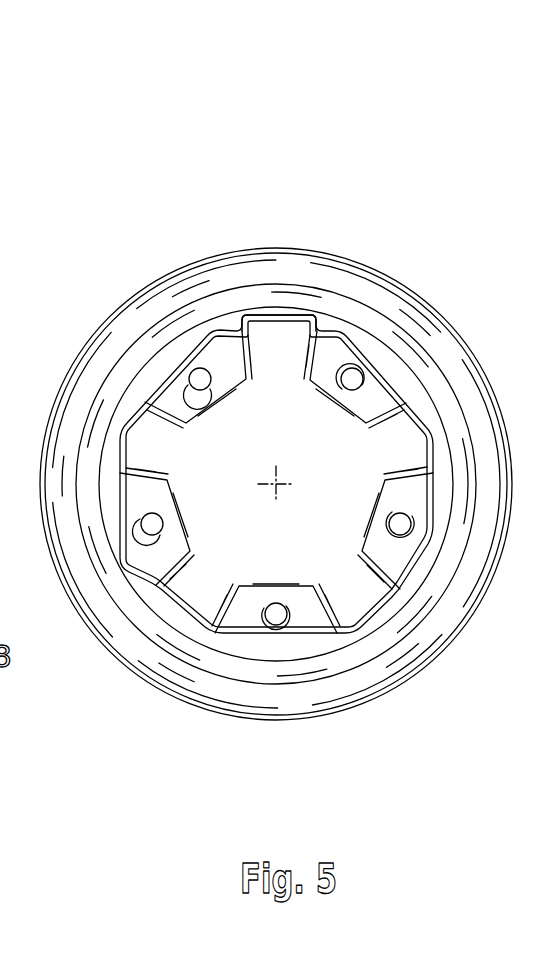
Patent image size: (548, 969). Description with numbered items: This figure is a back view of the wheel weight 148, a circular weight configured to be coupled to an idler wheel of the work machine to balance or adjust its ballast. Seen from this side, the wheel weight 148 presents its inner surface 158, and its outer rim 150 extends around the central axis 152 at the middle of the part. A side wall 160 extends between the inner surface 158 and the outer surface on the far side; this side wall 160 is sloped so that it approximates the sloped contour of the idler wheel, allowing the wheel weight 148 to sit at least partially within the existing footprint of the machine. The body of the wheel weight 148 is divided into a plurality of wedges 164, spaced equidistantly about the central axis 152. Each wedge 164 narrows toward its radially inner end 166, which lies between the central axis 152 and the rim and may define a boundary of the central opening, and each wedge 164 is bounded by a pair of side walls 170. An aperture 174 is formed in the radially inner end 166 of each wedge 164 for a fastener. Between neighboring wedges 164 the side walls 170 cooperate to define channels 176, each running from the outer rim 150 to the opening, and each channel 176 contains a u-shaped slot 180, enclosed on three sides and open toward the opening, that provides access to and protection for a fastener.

The wheel weight 148 is at (377, 152).
The outer rim 150 is at (287, 721).
The central axis 152 is at (272, 481).
The inner surface 158 is at (306, 628).
The side wall 160 is at (400, 325).
The wedge 164 is at (373, 517).
The radially inner end 166 is at (364, 583).
The side wall 170 is at (306, 349).
The aperture 174 is at (199, 366).
The channel 176 is at (192, 591).
The slot 180 is at (213, 578).